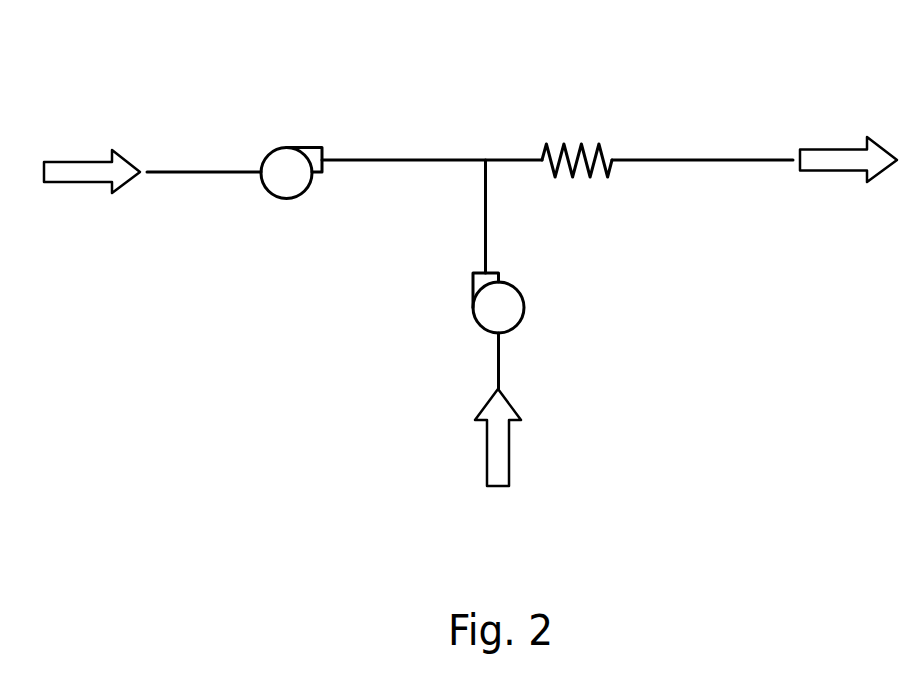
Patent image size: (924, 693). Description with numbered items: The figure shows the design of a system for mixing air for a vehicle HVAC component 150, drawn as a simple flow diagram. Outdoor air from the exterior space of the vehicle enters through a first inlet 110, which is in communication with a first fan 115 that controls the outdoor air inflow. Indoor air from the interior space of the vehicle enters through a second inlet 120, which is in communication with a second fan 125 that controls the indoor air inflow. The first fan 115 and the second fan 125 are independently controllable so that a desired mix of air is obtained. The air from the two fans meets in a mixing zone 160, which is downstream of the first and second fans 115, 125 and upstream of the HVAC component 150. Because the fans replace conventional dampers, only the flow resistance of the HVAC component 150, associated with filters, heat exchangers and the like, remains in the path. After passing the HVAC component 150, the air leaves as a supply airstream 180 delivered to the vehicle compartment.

The first inlet 110 is at (87, 172).
The first fan 115 is at (285, 160).
The second inlet 120 is at (492, 440).
The second fan 125 is at (503, 302).
The vehicle HVAC component 150 is at (570, 128).
The mixing zone 160 is at (486, 147).
The supply airstream 180 is at (849, 157).